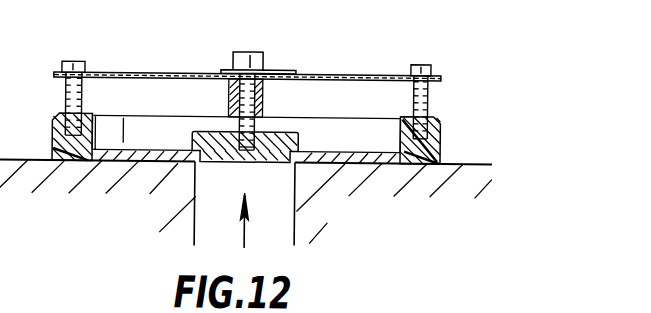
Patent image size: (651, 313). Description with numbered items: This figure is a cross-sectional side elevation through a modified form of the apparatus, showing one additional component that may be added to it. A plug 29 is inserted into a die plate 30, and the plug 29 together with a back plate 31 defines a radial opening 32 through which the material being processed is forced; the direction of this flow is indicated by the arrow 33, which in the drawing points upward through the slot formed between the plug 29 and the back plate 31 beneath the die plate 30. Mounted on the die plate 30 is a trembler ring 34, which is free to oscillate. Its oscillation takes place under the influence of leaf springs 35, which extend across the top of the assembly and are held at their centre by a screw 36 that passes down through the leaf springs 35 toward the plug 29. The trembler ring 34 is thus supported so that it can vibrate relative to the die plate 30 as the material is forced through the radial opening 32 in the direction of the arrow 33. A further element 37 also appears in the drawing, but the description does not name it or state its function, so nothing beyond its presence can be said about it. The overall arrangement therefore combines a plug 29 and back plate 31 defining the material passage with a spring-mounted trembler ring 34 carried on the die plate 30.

The plug 29 is at (279, 150).
The die plate 30 is at (117, 162).
The back plate 31 is at (399, 176).
The radial opening 32 is at (168, 160).
The arrow 33 is at (243, 238).
The trembler ring 34 is at (446, 142).
The leaf springs 35 is at (335, 74).
The screw 36 is at (245, 61).
The left clamp 37 is at (72, 110).